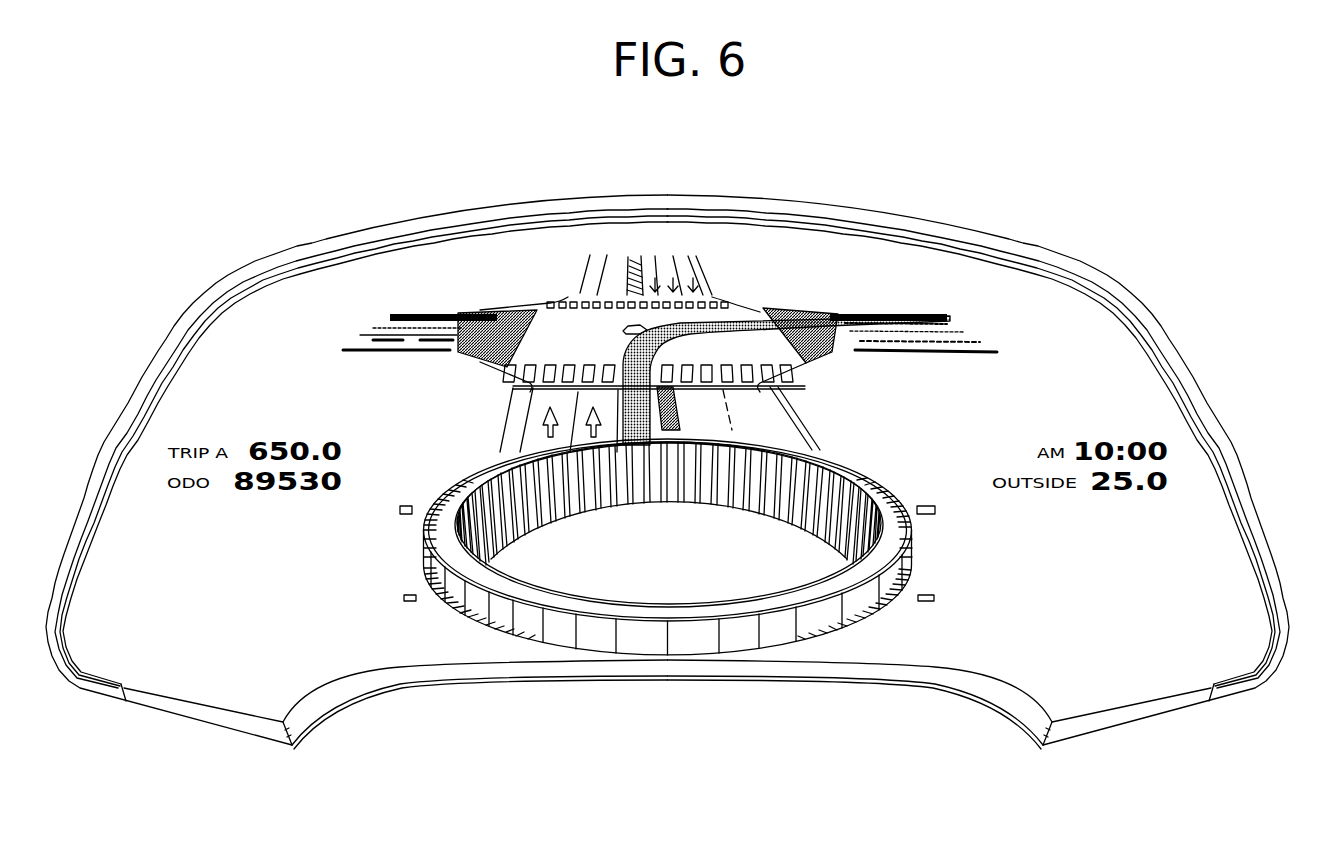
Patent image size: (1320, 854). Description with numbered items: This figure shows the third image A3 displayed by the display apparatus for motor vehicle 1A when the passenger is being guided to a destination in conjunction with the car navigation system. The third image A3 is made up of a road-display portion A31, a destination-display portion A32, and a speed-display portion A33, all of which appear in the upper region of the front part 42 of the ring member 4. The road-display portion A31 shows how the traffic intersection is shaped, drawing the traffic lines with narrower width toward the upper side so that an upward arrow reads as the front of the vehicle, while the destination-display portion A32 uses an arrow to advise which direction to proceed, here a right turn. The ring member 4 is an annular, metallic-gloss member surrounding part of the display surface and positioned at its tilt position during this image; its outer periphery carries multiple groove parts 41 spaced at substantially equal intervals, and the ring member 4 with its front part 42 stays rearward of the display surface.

The display apparatus for motor vehicle 1A is at (1088, 215).
The third image A3 is at (949, 290).
The road-display portion A31 is at (704, 252).
The destination-display portion A32 is at (720, 327).
The speed-display portion A33 is at (1046, 368).
The ring member 4 is at (730, 618).
The groove parts 41 is at (615, 628).
The front part 42 is at (653, 610).